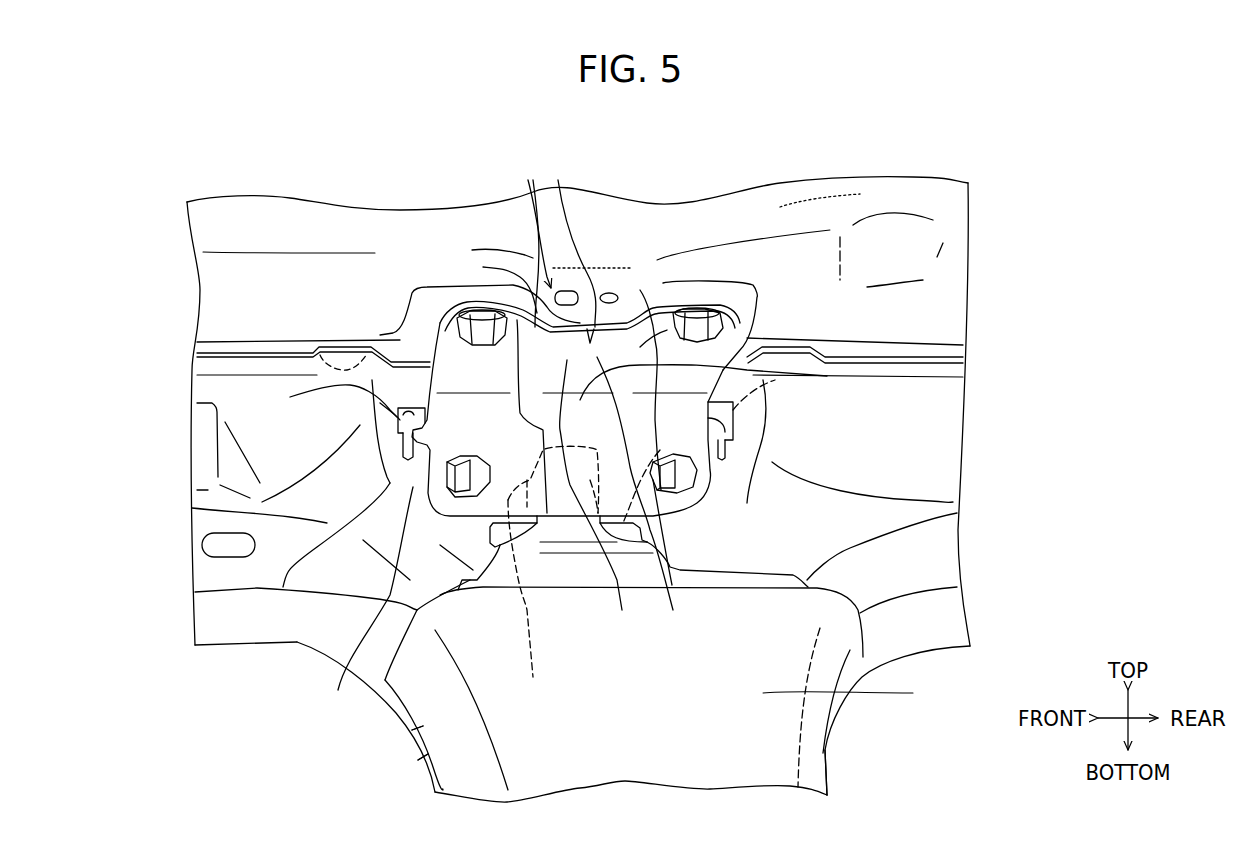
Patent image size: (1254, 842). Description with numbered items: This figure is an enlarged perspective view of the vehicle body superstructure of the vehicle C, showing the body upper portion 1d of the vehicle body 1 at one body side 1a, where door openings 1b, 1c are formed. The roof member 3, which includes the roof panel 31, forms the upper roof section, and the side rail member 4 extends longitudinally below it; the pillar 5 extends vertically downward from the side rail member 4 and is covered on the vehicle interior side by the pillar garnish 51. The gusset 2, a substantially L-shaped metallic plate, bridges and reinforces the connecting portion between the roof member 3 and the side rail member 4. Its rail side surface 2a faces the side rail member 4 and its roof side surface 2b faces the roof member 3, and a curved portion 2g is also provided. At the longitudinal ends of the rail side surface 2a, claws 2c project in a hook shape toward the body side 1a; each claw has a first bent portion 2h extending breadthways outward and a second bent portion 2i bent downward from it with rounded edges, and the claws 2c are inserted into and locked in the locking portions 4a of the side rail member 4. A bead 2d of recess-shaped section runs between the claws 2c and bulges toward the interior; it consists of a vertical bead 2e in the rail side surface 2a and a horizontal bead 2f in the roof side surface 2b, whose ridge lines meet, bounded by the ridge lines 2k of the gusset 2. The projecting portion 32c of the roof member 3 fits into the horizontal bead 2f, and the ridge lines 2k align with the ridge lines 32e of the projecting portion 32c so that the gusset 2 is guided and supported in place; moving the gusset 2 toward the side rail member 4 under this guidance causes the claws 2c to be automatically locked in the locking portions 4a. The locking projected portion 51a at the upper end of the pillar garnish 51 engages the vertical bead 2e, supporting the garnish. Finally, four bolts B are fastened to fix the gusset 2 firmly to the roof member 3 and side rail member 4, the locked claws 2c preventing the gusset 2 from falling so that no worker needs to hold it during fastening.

The vehicle body 1 is at (278, 186).
The body side 1a is at (950, 723).
The door opening 1b is at (420, 745).
The door opening 1c is at (828, 772).
The body upper portion 1d is at (203, 658).
The gusset 2 is at (630, 439).
The rail side surface 2a is at (369, 602).
The roof side surface 2b is at (433, 345).
The claw 2c is at (283, 587).
The bead 2d is at (693, 634).
The vertical bead 2e is at (673, 610).
The horizontal bead 2f is at (622, 610).
The curved portion 2g is at (716, 365).
The first bent portion 2h is at (398, 420).
The second bent portion 2i is at (415, 455).
The ridge line 2k is at (515, 317).
The roof member 3 is at (850, 200).
The roof panel 31 is at (783, 207).
The projecting portion 32c is at (572, 233).
The ridge line of projecting portion 32e is at (528, 214).
The side rail member 4 is at (924, 433).
The locking portion 4a is at (787, 398).
The pillar 5 is at (421, 760).
The pillar garnish 51 is at (664, 685).
The locking projected portion 51a is at (553, 575).
The bolt B is at (473, 313).
The vehicle C is at (982, 150).